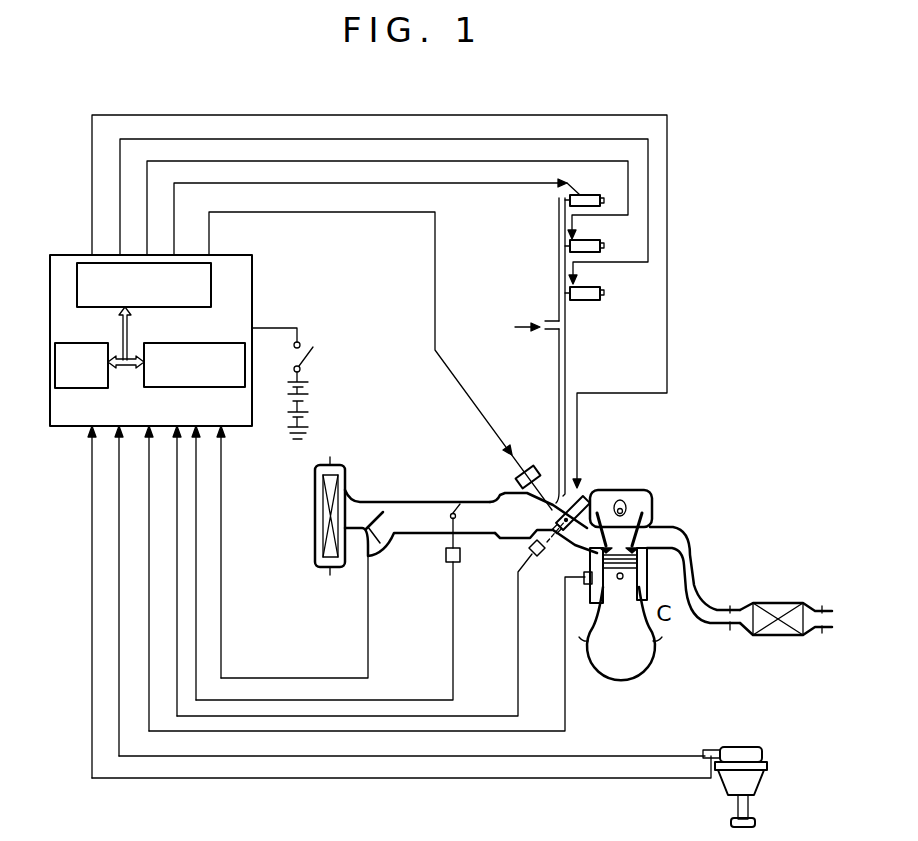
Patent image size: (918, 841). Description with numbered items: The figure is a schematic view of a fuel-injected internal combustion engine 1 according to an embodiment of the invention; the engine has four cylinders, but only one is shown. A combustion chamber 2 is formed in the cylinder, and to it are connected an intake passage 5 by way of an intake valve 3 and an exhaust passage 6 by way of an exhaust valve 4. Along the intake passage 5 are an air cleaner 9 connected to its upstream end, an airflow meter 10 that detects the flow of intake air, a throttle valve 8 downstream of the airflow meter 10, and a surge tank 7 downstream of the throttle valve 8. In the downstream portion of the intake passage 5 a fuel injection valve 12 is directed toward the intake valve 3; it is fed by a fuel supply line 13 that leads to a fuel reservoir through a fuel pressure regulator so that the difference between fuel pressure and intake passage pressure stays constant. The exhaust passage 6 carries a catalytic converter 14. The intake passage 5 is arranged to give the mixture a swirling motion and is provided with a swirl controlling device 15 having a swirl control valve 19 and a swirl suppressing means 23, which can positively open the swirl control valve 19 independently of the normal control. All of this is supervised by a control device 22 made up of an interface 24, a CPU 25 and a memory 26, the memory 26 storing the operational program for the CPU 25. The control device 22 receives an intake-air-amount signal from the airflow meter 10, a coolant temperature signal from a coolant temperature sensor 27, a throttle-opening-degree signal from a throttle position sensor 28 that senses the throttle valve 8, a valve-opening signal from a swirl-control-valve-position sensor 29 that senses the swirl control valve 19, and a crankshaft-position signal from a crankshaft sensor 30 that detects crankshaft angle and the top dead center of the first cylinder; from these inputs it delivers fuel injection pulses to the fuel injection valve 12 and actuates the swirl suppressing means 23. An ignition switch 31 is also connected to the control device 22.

The internal combustion engine 1 is at (648, 676).
The combustion chamber 2 is at (640, 557).
The intake valve 3 is at (606, 492).
The exhaust valve 4 is at (653, 517).
The intake passage 5 is at (405, 491).
The exhaust passage 6 is at (692, 584).
The surge tank 7 is at (503, 492).
The throttle valve 8 is at (446, 523).
The air cleaner 9 is at (315, 483).
The airflow meter 10 is at (370, 556).
The fuel injection valve 12 is at (591, 193).
The fuel supply line 13 is at (558, 353).
The catalytic converter 14 is at (773, 603).
The swirl controlling device 15 is at (553, 476).
The swirl control valve 19 is at (553, 550).
The control device 22 is at (258, 280).
The swirl suppressing means 23 is at (510, 458).
The interface 24 is at (184, 308).
The CPU 25 is at (107, 389).
The memory 26 is at (205, 388).
The coolant temperature sensor 27 is at (585, 586).
The throttle position sensor 28 is at (446, 553).
The swirl-control-valve-position sensor 29 is at (530, 550).
The crankshaft sensor 30 is at (711, 749).
The ignition switch 31 is at (313, 358).